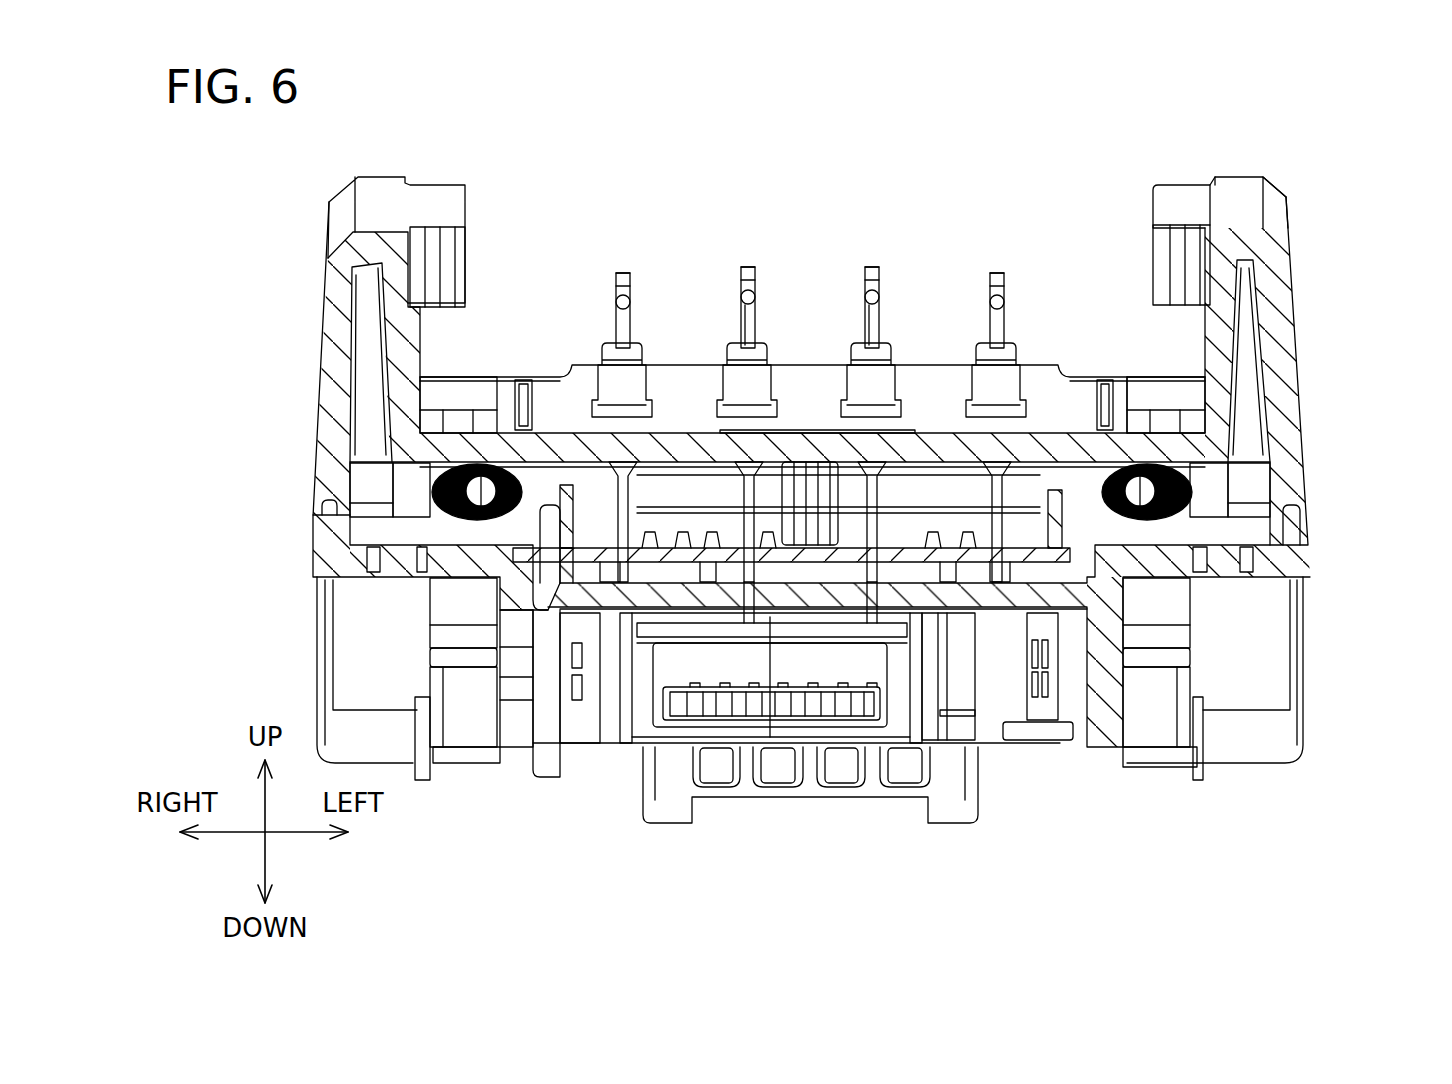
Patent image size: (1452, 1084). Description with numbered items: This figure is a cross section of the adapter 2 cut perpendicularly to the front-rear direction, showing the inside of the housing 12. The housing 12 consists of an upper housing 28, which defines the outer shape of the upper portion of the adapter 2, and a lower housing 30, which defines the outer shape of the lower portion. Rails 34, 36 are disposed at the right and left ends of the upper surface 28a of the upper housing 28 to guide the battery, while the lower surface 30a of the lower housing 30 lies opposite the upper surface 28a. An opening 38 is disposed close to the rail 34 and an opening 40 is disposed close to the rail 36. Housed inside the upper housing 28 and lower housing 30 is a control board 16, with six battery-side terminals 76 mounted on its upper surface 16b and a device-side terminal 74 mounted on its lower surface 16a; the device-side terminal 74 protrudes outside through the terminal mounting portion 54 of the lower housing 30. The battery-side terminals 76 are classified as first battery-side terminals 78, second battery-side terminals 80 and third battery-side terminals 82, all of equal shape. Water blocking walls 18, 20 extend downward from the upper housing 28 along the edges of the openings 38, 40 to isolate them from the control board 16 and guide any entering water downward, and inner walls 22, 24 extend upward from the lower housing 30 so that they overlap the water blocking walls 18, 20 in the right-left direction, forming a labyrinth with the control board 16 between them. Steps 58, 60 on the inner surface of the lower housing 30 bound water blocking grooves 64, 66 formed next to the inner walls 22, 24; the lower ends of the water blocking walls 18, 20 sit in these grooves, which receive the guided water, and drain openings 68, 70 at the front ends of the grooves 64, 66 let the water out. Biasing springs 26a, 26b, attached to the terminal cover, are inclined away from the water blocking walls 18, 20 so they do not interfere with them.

The adapter 2 is at (1310, 152).
The housing 12 is at (1346, 522).
The control board 16 is at (922, 558).
The lower surface 16a is at (823, 623).
The upper surface 16b is at (757, 615).
The water blocking wall 18 is at (552, 500).
The water blocking wall 20 is at (1142, 393).
The inner wall 22 is at (598, 525).
The inner wall 24 is at (1030, 558).
The biasing spring 26a is at (397, 483).
The biasing spring 26b is at (1240, 466).
The upper housing 28 is at (1292, 354).
The upper surface 28a is at (797, 403).
The lower housing 30 is at (1297, 548).
The lower surface 30a is at (873, 610).
The rail 34 is at (397, 242).
The rail 36 is at (1225, 240).
The opening 38 is at (485, 388).
The opening 40 is at (1147, 360).
The terminal mounting portion 54 is at (655, 647).
The step 58 is at (533, 612).
The step 60 is at (1095, 645).
The water blocking groove 64 is at (560, 558).
The water blocking groove 66 is at (1193, 580).
The drain opening 68 is at (545, 625).
The drain opening 70 is at (1080, 615).
The device-side terminal 74 is at (787, 707).
The battery-side terminals 76 is at (801, 335).
The first battery-side terminals 78 is at (748, 263).
The second battery-side terminals 80 is at (623, 265).
The third battery-side terminals 82 is at (748, 325).